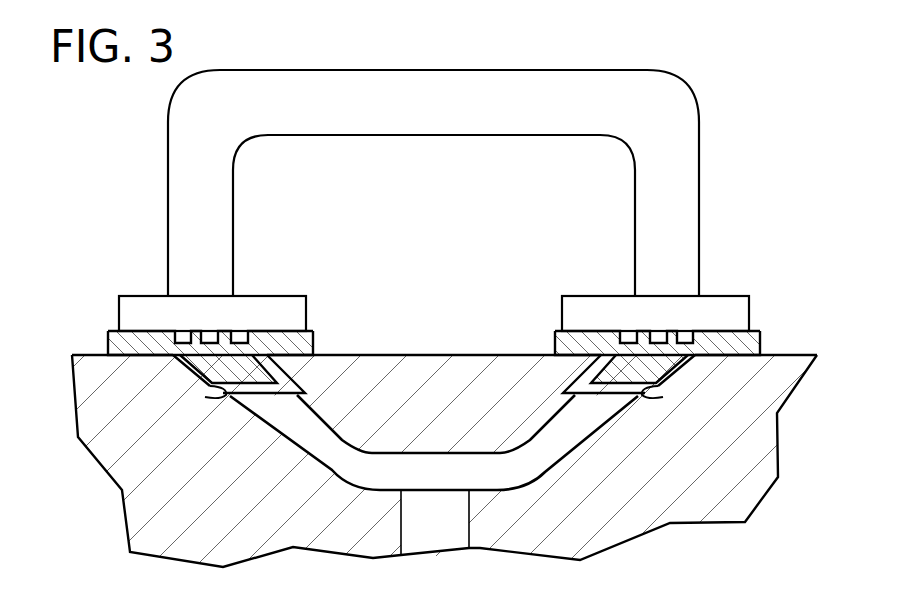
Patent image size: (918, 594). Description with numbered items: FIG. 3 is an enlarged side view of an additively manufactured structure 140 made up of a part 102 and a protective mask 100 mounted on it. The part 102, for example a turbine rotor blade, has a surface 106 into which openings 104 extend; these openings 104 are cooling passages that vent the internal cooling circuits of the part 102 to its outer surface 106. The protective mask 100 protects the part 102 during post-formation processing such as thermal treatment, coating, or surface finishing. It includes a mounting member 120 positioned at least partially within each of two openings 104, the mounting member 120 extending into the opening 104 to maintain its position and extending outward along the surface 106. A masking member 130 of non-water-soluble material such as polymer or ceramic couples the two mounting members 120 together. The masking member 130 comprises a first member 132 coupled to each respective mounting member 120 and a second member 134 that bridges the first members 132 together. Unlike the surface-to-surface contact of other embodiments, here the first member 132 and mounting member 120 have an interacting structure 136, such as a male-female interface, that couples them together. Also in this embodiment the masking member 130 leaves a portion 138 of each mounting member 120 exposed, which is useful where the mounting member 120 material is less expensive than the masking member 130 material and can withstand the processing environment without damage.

The protective mask 100 is at (481, 148).
The additively manufactured structure 140 is at (481, 148).
The masking member 130 is at (481, 148).
The second member 134 is at (676, 167).
The first member 132 is at (147, 305).
The interacting structure 136 is at (672, 335).
The exposed portion of mounting member 138 is at (459, 297).
The mounting member 120 is at (297, 342).
The surface of part 106 is at (85, 352).
The part 102 is at (95, 385).
The opening 104 is at (213, 399).